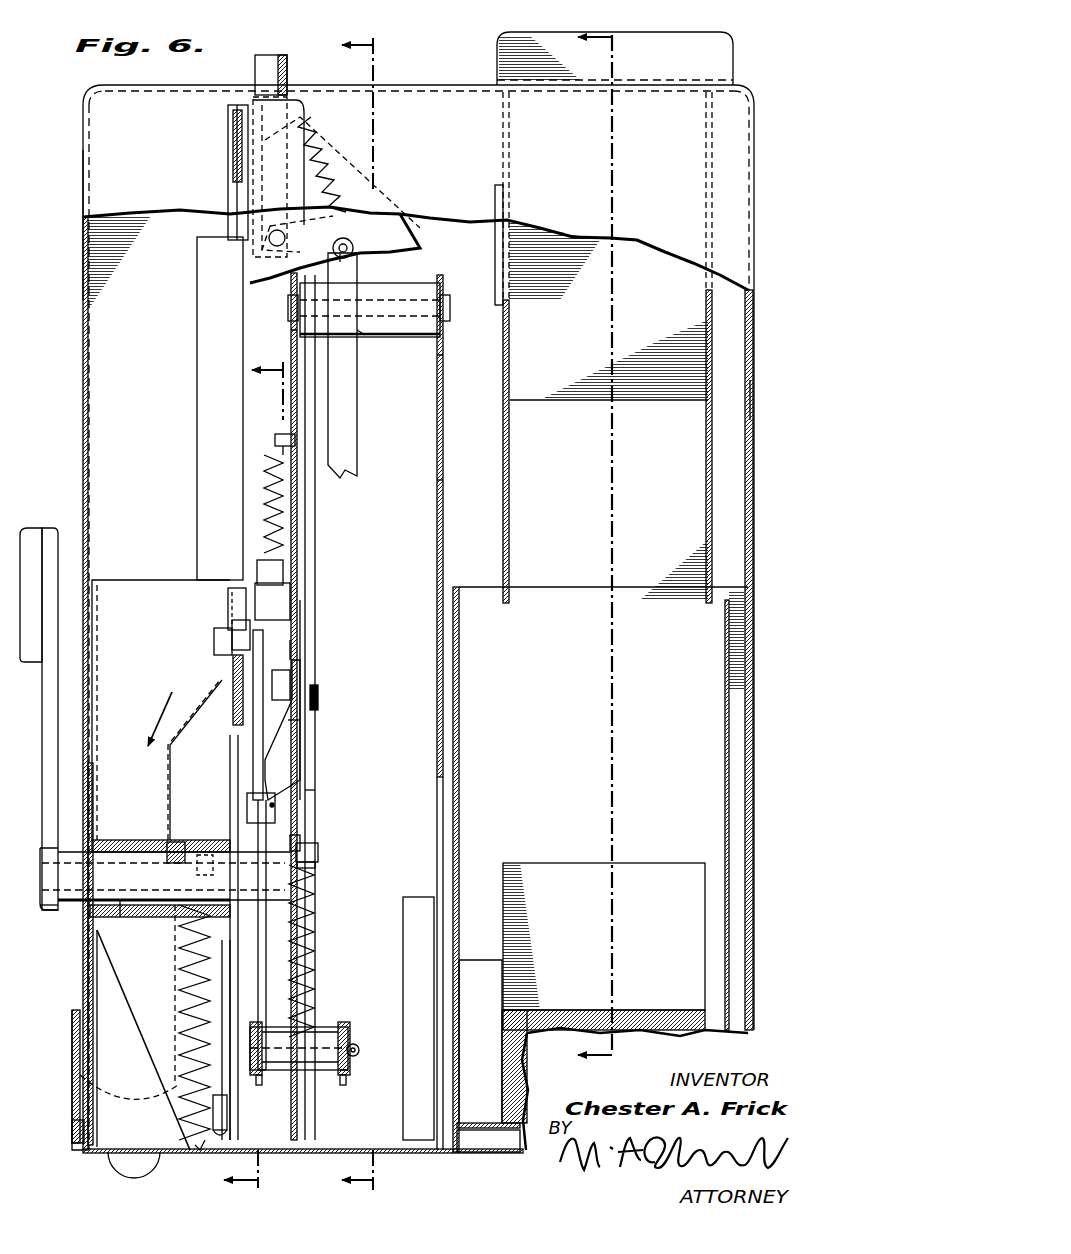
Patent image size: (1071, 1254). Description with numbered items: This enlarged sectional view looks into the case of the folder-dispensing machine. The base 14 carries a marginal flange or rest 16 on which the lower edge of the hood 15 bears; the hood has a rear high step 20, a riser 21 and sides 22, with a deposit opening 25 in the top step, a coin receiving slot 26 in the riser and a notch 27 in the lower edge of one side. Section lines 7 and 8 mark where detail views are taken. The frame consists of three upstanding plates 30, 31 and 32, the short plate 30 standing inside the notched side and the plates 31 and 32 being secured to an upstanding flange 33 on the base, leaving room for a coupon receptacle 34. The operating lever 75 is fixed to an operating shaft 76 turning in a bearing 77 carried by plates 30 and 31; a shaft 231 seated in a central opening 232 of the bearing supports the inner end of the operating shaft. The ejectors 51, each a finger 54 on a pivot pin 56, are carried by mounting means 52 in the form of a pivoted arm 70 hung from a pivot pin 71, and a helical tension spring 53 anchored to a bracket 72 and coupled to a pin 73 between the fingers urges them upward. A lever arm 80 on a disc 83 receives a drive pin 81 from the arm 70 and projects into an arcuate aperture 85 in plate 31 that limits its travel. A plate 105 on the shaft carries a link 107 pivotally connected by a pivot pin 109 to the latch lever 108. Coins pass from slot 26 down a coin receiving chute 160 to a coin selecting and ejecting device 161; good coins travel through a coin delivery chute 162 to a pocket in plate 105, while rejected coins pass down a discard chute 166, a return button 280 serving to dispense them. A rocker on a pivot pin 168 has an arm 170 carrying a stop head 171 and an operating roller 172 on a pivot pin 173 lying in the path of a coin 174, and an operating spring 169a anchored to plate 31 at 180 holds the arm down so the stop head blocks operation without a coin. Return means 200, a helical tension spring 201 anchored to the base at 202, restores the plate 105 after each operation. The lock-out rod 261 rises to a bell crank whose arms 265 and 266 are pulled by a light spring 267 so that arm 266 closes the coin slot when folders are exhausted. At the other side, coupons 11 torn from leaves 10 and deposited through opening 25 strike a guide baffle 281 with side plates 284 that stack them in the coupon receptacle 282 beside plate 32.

The leaf 10 is at (613, 551).
The section line 8- 8 is at (383, 615).
The section line 7- 7 is at (253, 764).
The coupon 11 is at (554, 863).
The base 14 is at (462, 1168).
The hood 15 is at (80, 305).
The marginal flange 16 is at (72, 1127).
The rear high step 20 is at (470, 88).
The riser 21 is at (100, 192).
The sides 22 is at (82, 402).
The deposit opening 25 is at (733, 78).
The coin receiving slot 26 is at (232, 142).
The notch 27 is at (72, 1020).
The plate 30 is at (94, 790).
The plate 31 is at (298, 515).
The plate 32 is at (444, 540).
The upstanding flange 33 is at (384, 1018).
The coupon receptacle 34 is at (730, 700).
The ejector 51 is at (352, 1025).
The mounting means 52 is at (318, 565).
The spring 53 is at (318, 960).
The finger 54 is at (252, 1038).
The pivot pin 56 is at (360, 1048).
The pivoted arm 70 is at (316, 628).
The pivot pin 71 is at (450, 305).
The bracket 72 is at (316, 822).
The pin 73 is at (320, 1050).
The operating lever 75 is at (40, 535).
The operating shaft 76 is at (130, 918).
The bearing 77 is at (115, 842).
The lever arm 80 is at (292, 725).
The drive pin 81 is at (292, 683).
The disc 83 is at (300, 838).
The arcuate aperture 85 is at (292, 652).
The plate 105 is at (229, 793).
The link 107 is at (220, 1040).
The latch lever 108 is at (192, 1152).
The pivot pin 109 is at (222, 1126).
The coin receiving chute 160 is at (230, 220).
The coin selecting and ejecting device 161 is at (197, 333).
The coin delivery chute 162 is at (227, 598).
The discard chute 166 is at (130, 585).
The pivot pin 168 is at (292, 598).
The operating spring 169a is at (264, 488).
The arm 170 is at (270, 708).
The stop head 171 is at (275, 805).
The operating roller 172 is at (232, 630).
The pivot pin 173 is at (214, 642).
The coin 174 is at (232, 672).
The spring anchor 180 is at (274, 440).
The return means 200 is at (172, 1020).
The helical tension spring 201 is at (178, 972).
The spring anchor 202 is at (158, 1160).
The shaft 231 is at (318, 870).
The central opening 232 is at (205, 855).
The shiftable rod 261 is at (360, 414).
The bell crank arm 265 is at (283, 262).
The bell crank arm 266 is at (313, 110).
The spring 267 is at (365, 182).
The return button 280 is at (254, 65).
The guide baffle 281 is at (609, 349).
The coupon receptacle 282 is at (600, 869).
The side plates 284 is at (510, 480).